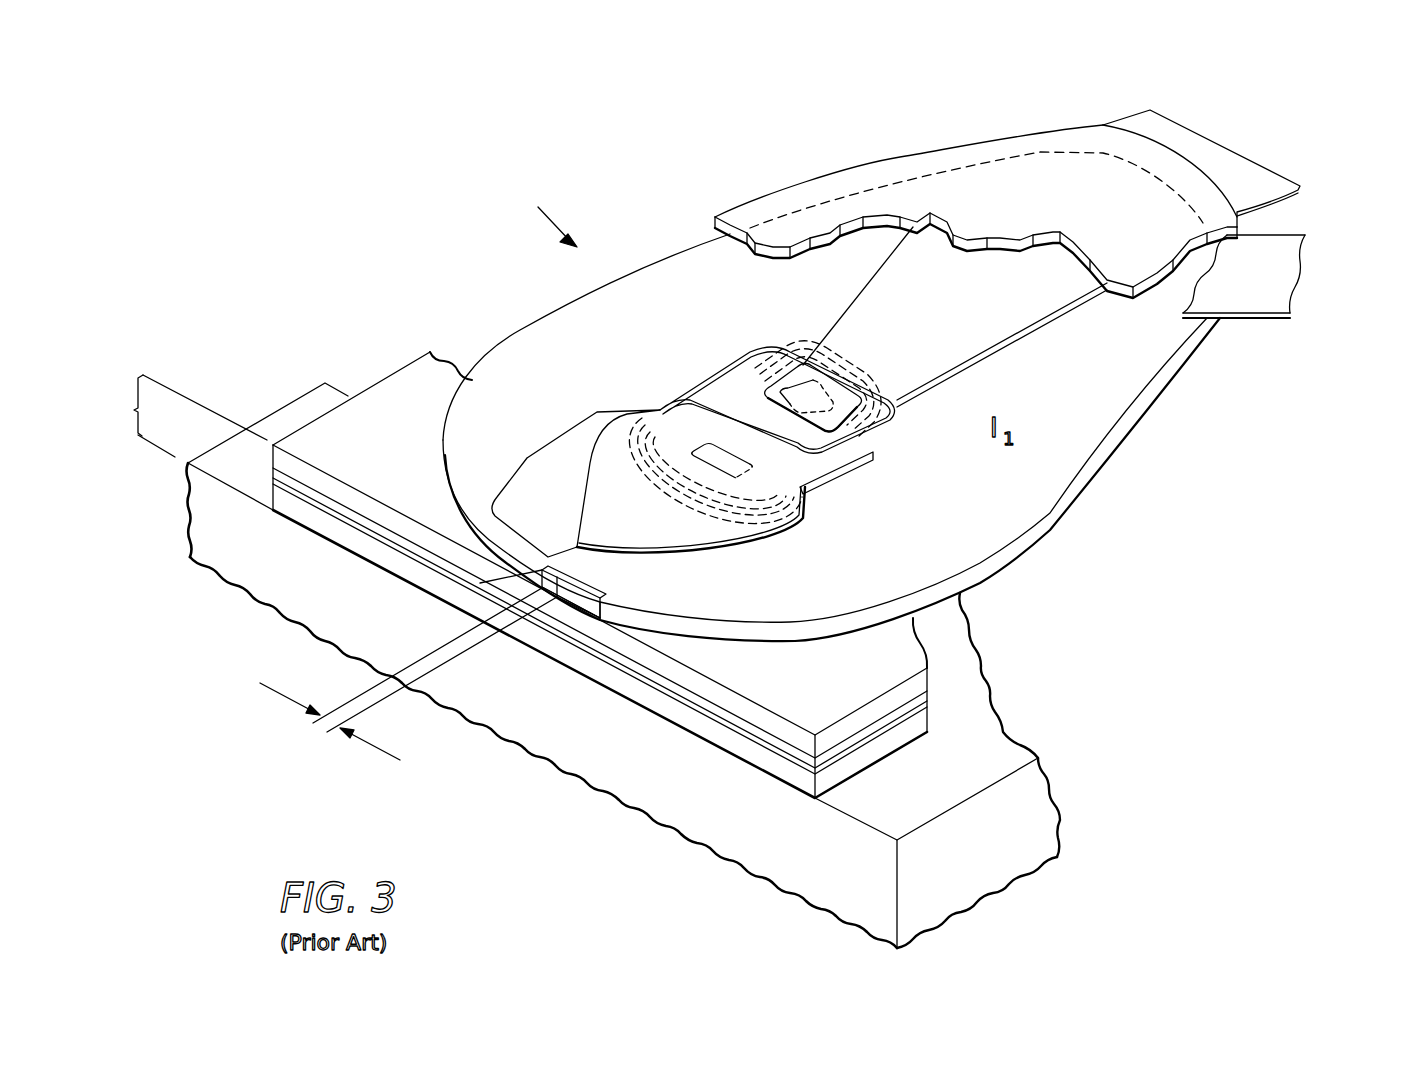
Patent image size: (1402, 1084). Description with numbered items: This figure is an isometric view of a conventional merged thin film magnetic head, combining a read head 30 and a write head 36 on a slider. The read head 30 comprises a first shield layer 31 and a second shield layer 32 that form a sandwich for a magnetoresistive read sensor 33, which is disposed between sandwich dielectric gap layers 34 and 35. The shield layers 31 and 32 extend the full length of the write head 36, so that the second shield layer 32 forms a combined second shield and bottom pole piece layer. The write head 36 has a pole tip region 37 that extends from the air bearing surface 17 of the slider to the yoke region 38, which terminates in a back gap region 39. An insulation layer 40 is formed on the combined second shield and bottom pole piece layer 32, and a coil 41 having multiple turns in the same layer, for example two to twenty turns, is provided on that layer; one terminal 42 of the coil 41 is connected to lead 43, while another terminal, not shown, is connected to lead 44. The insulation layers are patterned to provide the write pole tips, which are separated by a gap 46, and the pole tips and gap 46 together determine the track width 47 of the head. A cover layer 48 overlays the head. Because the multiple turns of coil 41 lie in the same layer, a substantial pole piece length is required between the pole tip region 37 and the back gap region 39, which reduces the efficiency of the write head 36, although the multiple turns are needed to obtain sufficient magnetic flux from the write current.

The air bearing surface 17 is at (593, 762).
The read head 30 is at (183, 416).
The first shield layer 31 is at (845, 768).
The second shield layer 32 is at (918, 688).
The magnetoresistive read sensor 33 is at (535, 595).
The dielectric gap layer 34 is at (870, 737).
The dielectric gap layer 35 is at (897, 715).
The write head 36 is at (537, 209).
The pole tip region 37 is at (607, 590).
The yoke region 38 is at (543, 462).
The back gap region 39 is at (717, 457).
The insulation layer 40 is at (1067, 492).
The coil 41 is at (840, 478).
The terminal 42 is at (803, 383).
The lead 43 is at (946, 314).
The lead 44 is at (1267, 270).
The gap 46 is at (540, 571).
The track width 47 is at (378, 750).
The cover layer 48 is at (1066, 210).